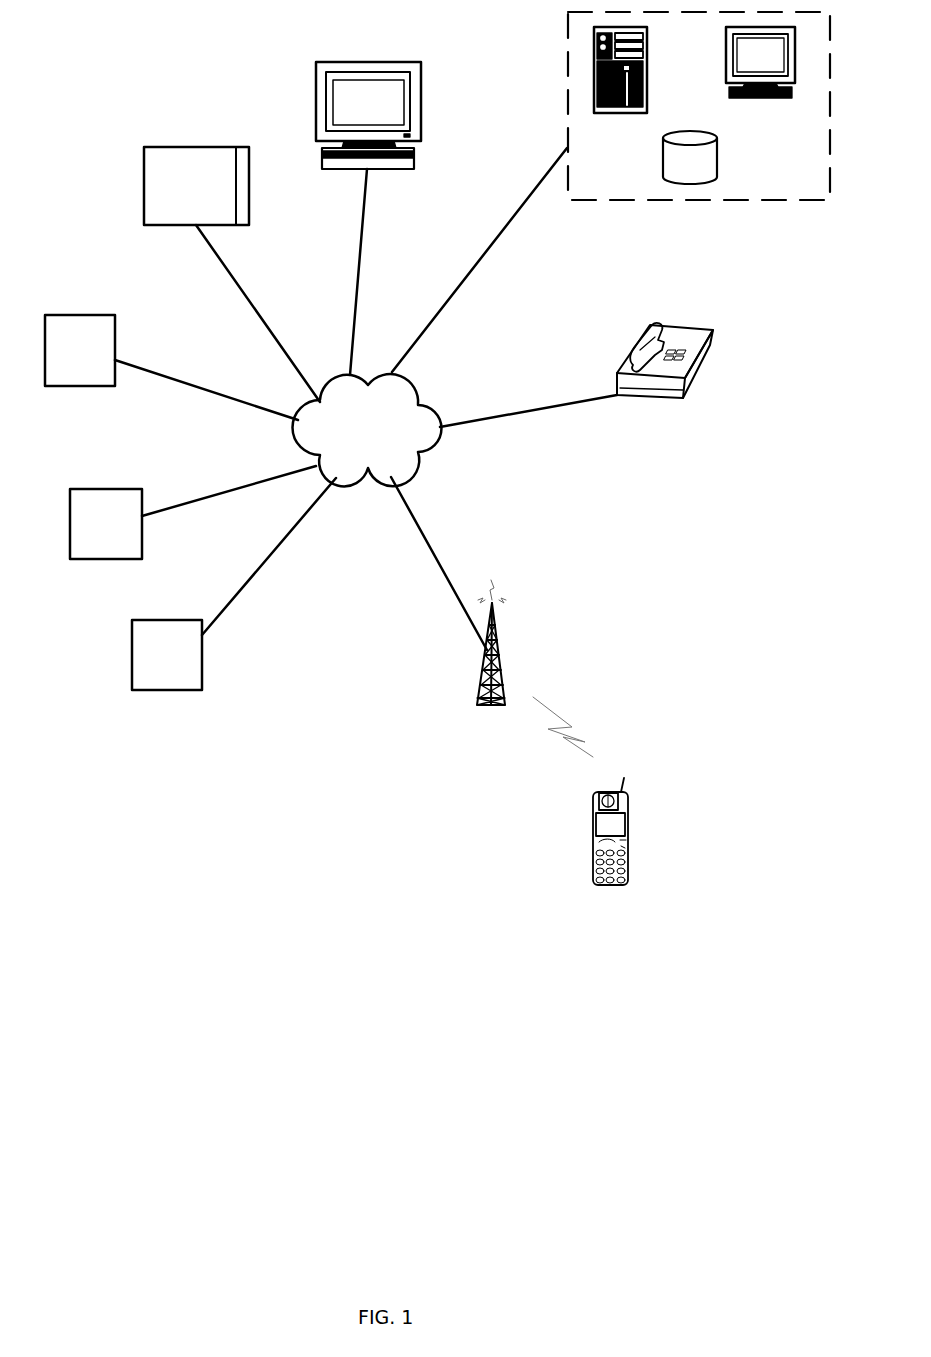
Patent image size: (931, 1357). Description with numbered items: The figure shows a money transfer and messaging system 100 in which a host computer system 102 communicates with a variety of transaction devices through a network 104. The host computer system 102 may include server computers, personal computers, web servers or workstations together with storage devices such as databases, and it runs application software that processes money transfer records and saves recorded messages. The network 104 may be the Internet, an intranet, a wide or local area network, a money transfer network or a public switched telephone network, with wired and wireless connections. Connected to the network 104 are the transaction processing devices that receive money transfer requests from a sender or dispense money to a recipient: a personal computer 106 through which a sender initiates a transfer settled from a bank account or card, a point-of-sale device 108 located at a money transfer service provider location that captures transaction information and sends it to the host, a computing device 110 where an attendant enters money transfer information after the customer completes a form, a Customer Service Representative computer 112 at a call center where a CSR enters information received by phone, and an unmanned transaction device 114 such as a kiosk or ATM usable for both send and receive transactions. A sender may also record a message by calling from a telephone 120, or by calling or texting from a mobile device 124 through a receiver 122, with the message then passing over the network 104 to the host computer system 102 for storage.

The money transfer and messaging system 100 is at (373, 1025).
The host computer system 102 is at (567, 92).
The network 104 is at (366, 399).
The personal computer 106 is at (314, 115).
The point-of-sale device 108 is at (143, 187).
The computing device 110 is at (116, 327).
The Customer Service Representative computer 112 is at (69, 517).
The unmanned transaction device 114 is at (152, 690).
The telephone 120 is at (660, 400).
The receiver 122 is at (497, 650).
The mobile device 124 is at (582, 830).